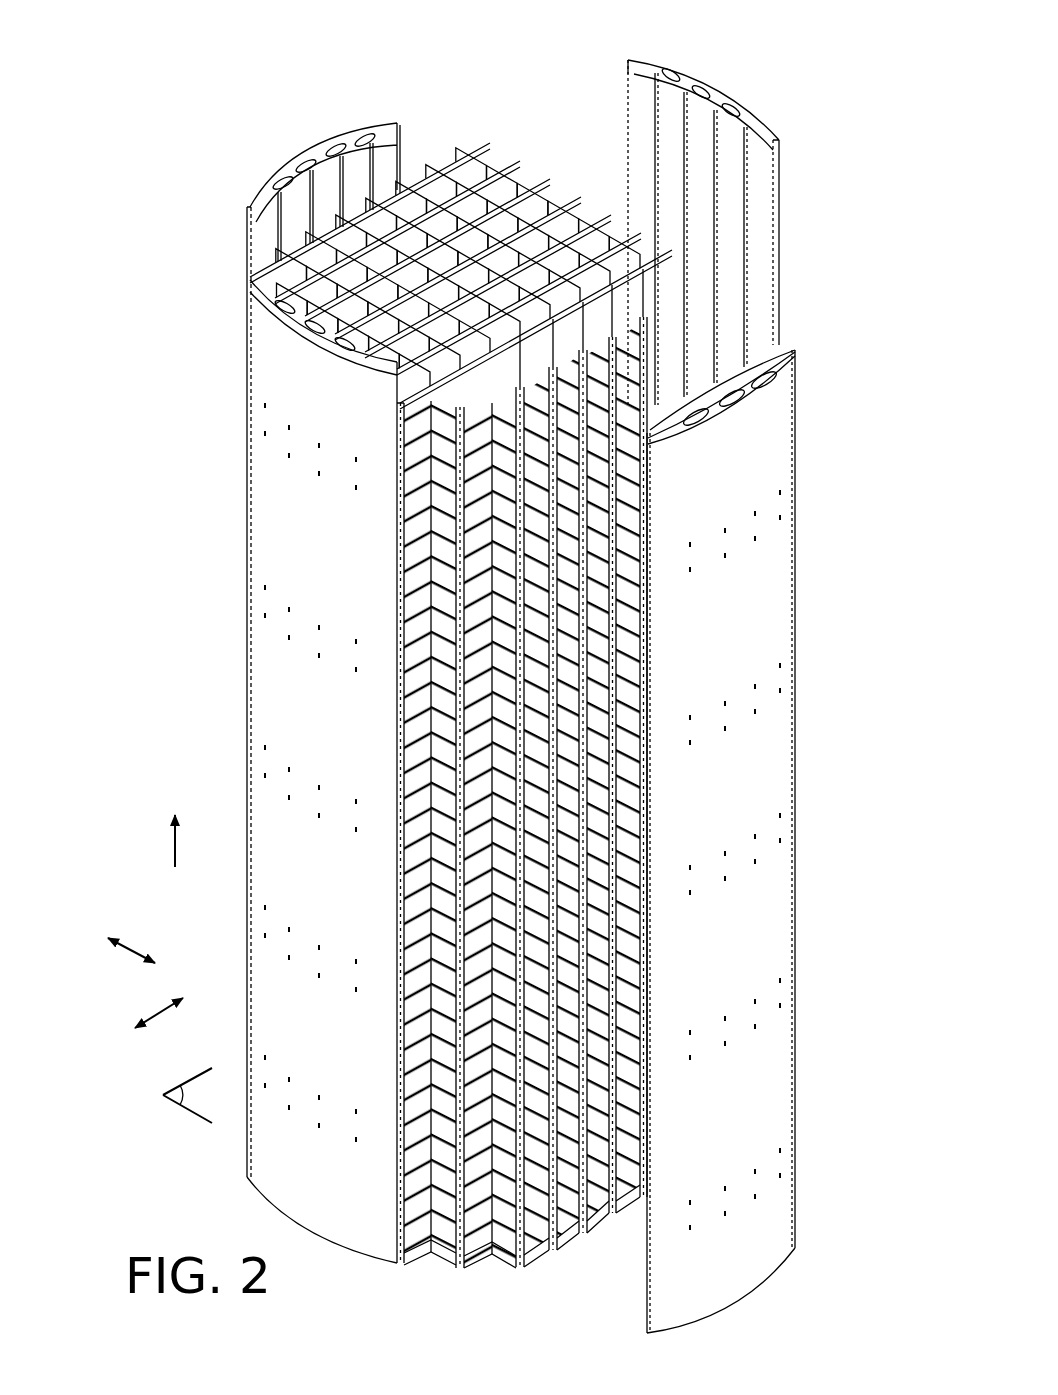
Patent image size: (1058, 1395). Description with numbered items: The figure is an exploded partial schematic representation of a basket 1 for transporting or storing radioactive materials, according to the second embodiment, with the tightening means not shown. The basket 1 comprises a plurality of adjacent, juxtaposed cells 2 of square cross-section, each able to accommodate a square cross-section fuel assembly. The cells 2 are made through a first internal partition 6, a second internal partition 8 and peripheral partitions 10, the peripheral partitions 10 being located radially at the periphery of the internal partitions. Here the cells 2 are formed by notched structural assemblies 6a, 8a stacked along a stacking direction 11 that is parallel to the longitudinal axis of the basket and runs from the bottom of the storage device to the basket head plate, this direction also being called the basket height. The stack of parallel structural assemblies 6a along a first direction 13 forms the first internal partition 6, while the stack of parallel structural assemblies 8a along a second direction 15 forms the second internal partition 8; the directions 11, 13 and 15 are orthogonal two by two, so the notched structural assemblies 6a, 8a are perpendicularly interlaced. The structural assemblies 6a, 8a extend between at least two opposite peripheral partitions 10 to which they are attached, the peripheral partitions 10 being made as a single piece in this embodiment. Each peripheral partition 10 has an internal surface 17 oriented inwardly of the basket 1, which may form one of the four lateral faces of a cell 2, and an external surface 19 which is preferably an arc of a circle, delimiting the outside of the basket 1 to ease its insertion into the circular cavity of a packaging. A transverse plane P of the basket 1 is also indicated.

The basket 1 is at (163, 257).
The cells 2 is at (449, 324).
The first internal partition 6 is at (615, 210).
The structural assemblies 6a is at (415, 655).
The second internal partition 8 is at (525, 620).
The structural assemblies 8a is at (443, 745).
The peripheral partitions 10 is at (268, 188).
The stacking direction 11 is at (172, 846).
The first direction 13 is at (152, 1026).
The second direction 15 is at (136, 947).
The internal surfaces 17 is at (388, 138).
The external surfaces 19 is at (296, 152).
The transverse plane P is at (163, 1095).